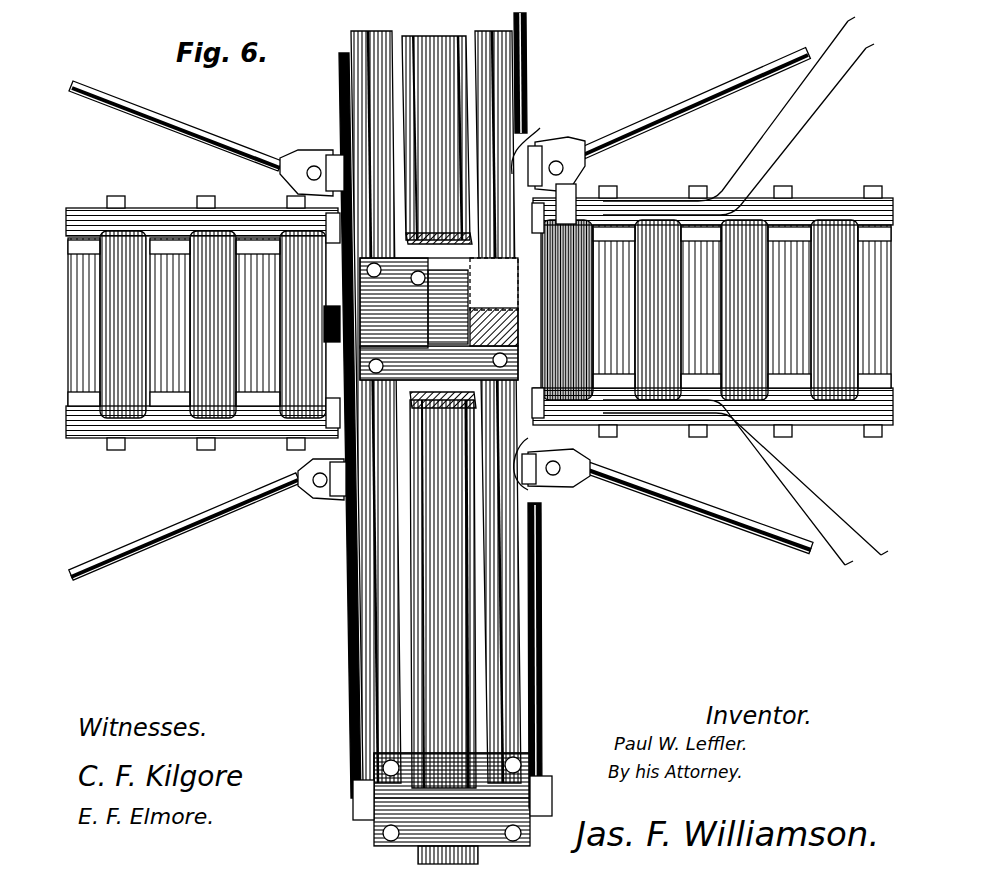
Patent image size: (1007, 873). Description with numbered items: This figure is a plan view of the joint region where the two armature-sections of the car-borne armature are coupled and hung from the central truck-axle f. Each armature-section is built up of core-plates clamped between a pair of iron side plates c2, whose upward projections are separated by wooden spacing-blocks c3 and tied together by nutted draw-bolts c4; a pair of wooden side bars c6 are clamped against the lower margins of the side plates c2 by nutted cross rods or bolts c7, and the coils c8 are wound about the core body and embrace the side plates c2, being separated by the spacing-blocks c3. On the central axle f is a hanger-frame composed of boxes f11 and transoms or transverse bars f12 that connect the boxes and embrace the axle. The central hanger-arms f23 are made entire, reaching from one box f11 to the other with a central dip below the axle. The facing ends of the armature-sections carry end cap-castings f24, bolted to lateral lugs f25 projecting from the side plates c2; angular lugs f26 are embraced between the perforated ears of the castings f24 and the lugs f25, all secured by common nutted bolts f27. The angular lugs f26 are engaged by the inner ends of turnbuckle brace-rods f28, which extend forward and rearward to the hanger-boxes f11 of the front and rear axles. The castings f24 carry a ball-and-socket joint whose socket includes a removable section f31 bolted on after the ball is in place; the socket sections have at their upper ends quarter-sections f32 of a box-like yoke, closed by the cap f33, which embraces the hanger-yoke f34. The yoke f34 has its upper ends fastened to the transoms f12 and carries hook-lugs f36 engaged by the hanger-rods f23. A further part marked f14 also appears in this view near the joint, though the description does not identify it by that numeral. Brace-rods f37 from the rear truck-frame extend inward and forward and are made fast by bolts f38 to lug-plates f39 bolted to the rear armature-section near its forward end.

The truck-axle f is at (544, 540).
The hanger-box f11 is at (372, 808).
The transom f12 is at (362, 104).
The center fitting f14 is at (462, 280).
The central hanger-arm f23 is at (333, 78).
The end cap-casting f24 is at (498, 262).
The lateral lug f25 is at (530, 170).
The angular lug f26 is at (538, 492).
The nutted bolt f27 is at (560, 170).
The turnbuckle brace-rod f28 is at (150, 96).
The removable socket section f31 is at (650, 416).
The quarter-section of box-like yoke f32 is at (428, 222).
The cap of box-like yoke f33 is at (404, 268).
The hanger-yoke f34 is at (452, 312).
The hook-lug f36 is at (318, 314).
The brace-rod f37 is at (825, 44).
The bolt f38 is at (606, 190).
The lug-plate f39 is at (690, 200).
The side plate c2 is at (158, 230).
The wooden spacing-block c3 is at (205, 230).
The nutted draw-bolt c4 is at (164, 200).
The wooden side bar c6 is at (90, 205).
The nutted cross rod c7 is at (288, 188).
The armature coil c8 is at (510, 376).